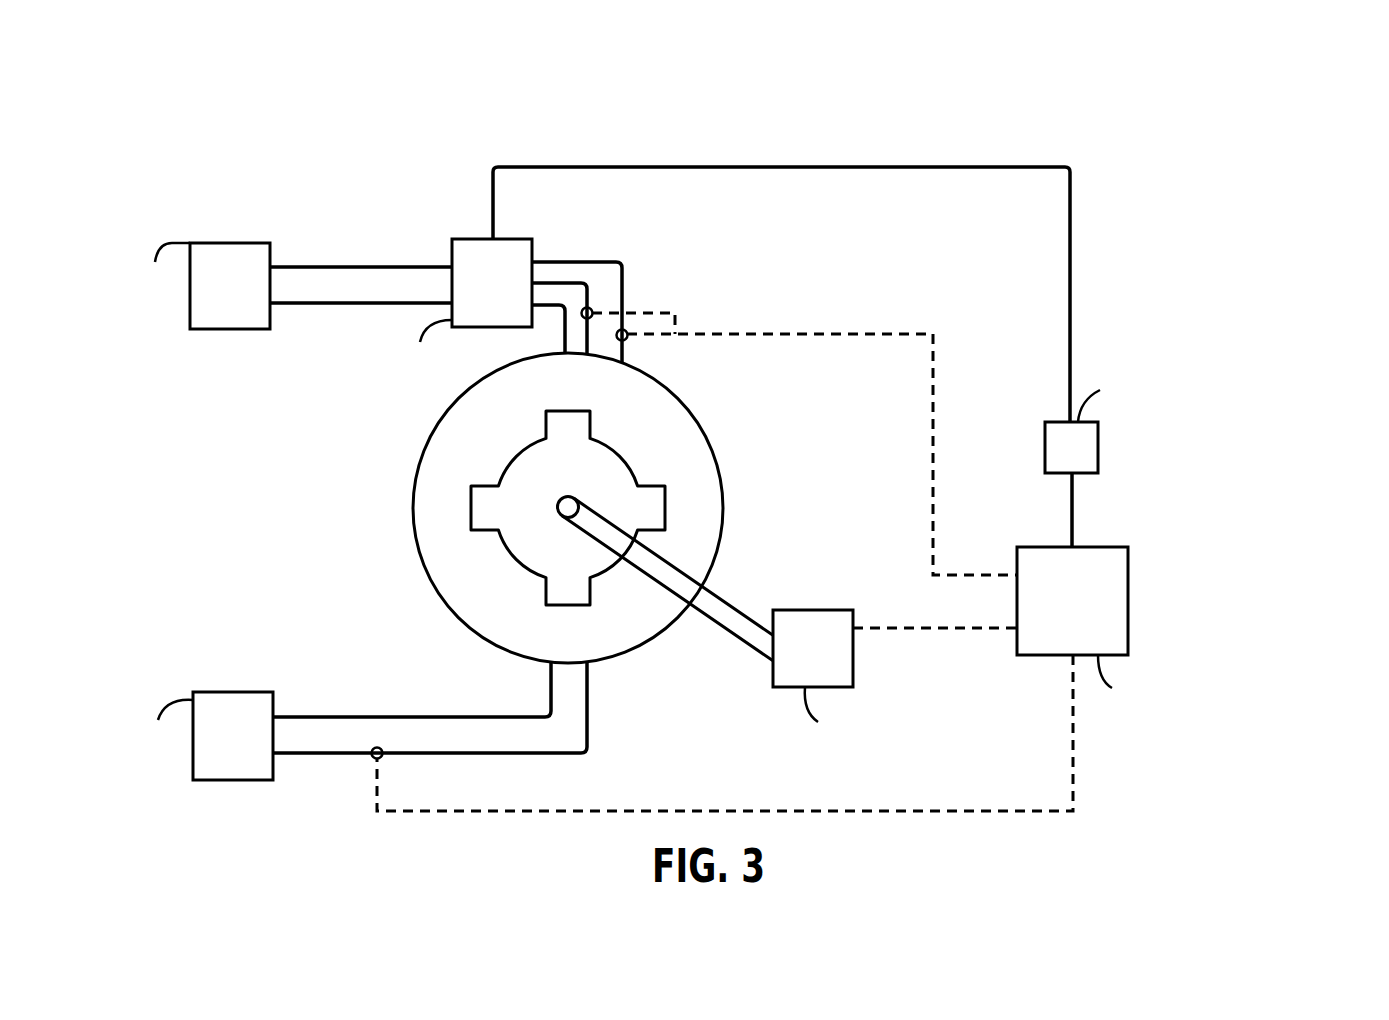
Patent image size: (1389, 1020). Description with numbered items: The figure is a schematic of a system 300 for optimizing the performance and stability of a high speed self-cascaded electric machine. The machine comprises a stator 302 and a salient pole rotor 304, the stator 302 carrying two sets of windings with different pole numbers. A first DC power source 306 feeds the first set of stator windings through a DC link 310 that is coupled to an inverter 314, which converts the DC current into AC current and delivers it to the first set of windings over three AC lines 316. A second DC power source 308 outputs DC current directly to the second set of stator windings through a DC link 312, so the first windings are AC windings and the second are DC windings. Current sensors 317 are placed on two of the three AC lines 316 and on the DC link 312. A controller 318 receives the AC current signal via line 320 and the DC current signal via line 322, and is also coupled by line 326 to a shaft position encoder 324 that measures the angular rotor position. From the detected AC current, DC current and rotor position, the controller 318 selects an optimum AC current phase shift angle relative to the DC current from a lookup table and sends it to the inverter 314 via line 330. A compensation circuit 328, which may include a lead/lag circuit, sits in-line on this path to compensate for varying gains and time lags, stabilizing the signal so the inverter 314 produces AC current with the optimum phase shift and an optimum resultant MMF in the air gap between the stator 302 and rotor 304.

The system 300 is at (1130, 114).
The stator 302 is at (440, 600).
The salient pole rotor 304 is at (514, 456).
The first DC power source 306 is at (228, 329).
The second DC power source 308 is at (232, 692).
The DC link 310 is at (360, 267).
The DC link 312 is at (408, 716).
The inverter 314 is at (470, 239).
The lines 316 is at (625, 280).
The current sensors 317 is at (628, 342).
The controller 318 is at (1128, 600).
The line 320 is at (933, 452).
The line 322 is at (728, 811).
The shaft position encoder 324 is at (812, 610).
The line 326 is at (937, 631).
The compensation circuit 328 is at (1098, 445).
The line 330 is at (780, 167).